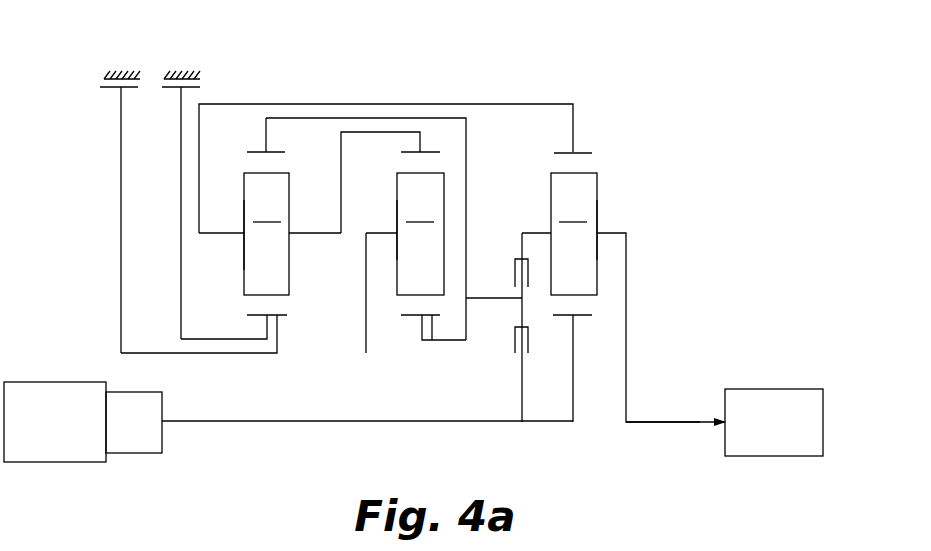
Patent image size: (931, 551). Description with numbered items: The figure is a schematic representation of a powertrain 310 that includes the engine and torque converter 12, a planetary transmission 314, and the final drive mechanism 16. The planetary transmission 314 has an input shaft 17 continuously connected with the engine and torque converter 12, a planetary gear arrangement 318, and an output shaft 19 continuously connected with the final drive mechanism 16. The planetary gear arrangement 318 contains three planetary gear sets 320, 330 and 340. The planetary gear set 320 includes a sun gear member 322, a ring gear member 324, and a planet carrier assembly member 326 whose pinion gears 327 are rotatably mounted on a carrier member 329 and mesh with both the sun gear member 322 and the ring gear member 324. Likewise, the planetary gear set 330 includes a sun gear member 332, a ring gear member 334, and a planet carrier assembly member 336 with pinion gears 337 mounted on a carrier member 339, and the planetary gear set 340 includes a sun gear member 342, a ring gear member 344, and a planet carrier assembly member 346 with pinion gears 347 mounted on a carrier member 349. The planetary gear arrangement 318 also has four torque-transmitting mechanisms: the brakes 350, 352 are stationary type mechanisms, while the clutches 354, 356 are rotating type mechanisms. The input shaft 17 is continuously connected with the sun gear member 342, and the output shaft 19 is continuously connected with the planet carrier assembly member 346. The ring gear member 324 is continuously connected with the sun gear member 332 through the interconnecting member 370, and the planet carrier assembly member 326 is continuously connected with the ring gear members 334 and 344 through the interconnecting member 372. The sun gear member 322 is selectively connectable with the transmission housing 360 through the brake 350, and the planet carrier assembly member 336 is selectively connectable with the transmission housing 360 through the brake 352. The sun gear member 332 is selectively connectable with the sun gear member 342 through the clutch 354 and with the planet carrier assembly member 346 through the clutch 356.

The engine and torque converter 12 is at (72, 378).
The final drive mechanism 16 is at (760, 385).
The input shaft 17 is at (188, 425).
The output shaft 19 is at (692, 427).
The powertrain 310 is at (700, 130).
The planetary transmission 314 is at (363, 86).
The planetary gear arrangement 318 is at (482, 86).
The planetary gear set 320 is at (258, 322).
The sun gear member 322 is at (280, 322).
The ring gear member 324 is at (259, 148).
The planet carrier assembly member 326 is at (238, 244).
The pinion gears 327 is at (267, 211).
The carrier member 329 is at (226, 232).
The planetary gear set 330 is at (415, 322).
The sun gear member 332 is at (433, 322).
The ring gear member 334 is at (415, 148).
The planet carrier assembly member 336 is at (392, 224).
The pinion gears 337 is at (420, 211).
The carrier member 339 is at (381, 236).
The planetary gear set 340 is at (565, 322).
The sun gear member 342 is at (587, 322).
The ring gear member 344 is at (567, 150).
The planet carrier assembly member 346 is at (605, 226).
The pinion gears 347 is at (574, 234).
The carrier member 349 is at (612, 233).
The brake 350 is at (206, 83).
The brake 352 is at (97, 83).
The clutch 354 is at (507, 343).
The clutch 356 is at (511, 256).
The transmission housing 360 is at (110, 72).
The interconnecting member 370 is at (467, 159).
The interconnecting member 372 is at (338, 151).